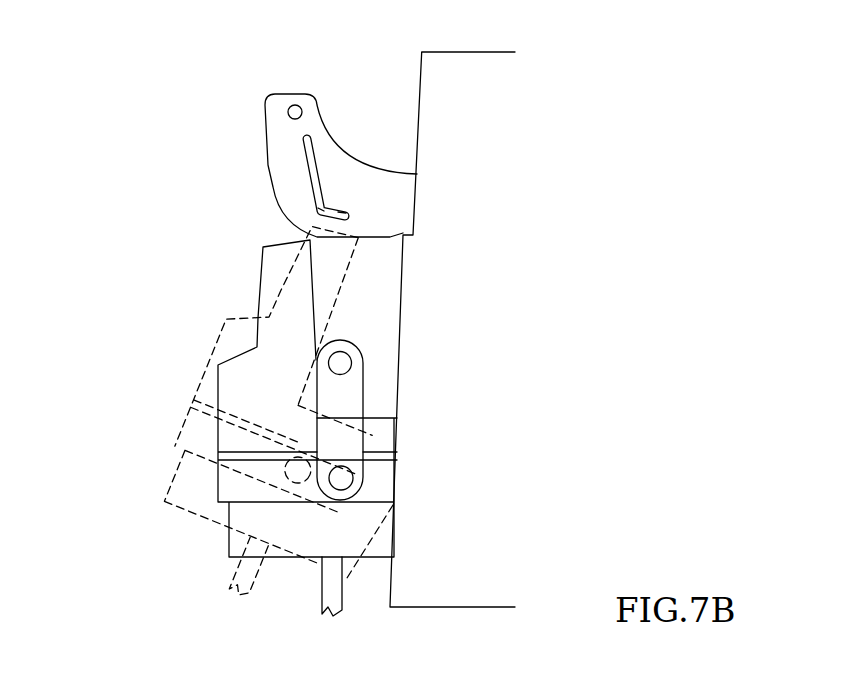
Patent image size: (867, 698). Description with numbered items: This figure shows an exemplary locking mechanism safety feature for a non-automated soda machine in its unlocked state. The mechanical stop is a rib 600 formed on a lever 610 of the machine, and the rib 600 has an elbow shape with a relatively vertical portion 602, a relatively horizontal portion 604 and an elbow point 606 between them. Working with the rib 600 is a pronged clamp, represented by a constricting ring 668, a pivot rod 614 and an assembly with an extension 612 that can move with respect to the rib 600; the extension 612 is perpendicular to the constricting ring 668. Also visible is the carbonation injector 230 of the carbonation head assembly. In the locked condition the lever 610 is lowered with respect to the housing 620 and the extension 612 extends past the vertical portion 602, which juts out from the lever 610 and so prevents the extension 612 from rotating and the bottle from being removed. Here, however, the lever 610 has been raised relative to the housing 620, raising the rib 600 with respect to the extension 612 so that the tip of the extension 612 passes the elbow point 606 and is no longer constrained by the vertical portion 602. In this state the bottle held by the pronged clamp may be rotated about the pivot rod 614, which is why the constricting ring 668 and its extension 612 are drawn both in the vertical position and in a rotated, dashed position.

The rib 600 is at (272, 162).
The relatively vertical portion 602 is at (313, 147).
The relatively horizontal portion 604 is at (343, 213).
The elbow point 606 is at (328, 207).
The lever 610 is at (263, 135).
The extension 612 is at (283, 272).
The pivot rod 614 is at (277, 447).
The housing 620 is at (468, 52).
The constricting ring 668 is at (225, 518).
The carbonation injector 230 is at (320, 592).